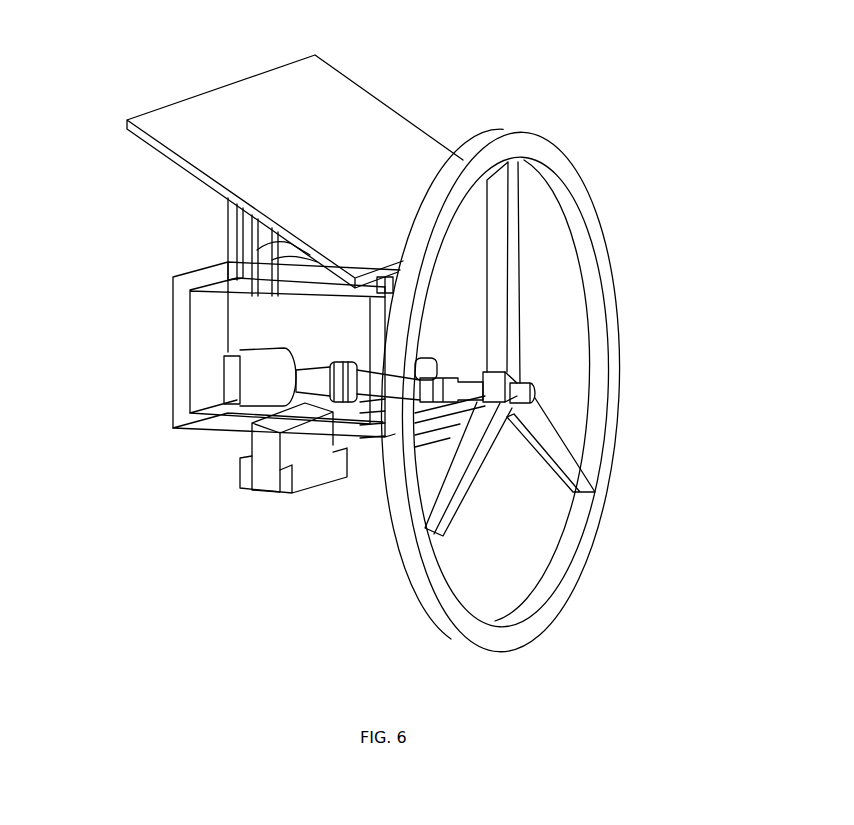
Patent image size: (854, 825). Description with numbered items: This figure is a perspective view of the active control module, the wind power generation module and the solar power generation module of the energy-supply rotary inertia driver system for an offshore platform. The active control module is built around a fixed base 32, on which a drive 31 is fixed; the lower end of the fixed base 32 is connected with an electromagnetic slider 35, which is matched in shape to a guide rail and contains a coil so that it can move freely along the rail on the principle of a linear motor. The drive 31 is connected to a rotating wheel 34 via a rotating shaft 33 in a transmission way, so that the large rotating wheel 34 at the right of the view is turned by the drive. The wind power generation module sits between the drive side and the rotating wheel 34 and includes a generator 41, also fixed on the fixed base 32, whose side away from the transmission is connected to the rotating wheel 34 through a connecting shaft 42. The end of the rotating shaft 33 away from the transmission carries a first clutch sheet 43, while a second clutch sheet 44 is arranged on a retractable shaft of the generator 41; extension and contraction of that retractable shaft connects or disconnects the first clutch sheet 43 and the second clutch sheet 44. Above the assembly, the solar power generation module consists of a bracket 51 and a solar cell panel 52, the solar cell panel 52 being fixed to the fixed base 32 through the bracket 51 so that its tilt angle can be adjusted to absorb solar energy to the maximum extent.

The drive 31 is at (274, 371).
The fixed base 32 is at (182, 365).
The rotating shaft 33 is at (313, 380).
The rotating wheel 34 is at (405, 540).
The electromagnetic slider 35 is at (317, 475).
The generator 41 is at (368, 383).
The connecting shaft 42 is at (445, 390).
The first clutch sheet 43 is at (337, 365).
The second clutch sheet 44 is at (353, 372).
The bracket 51 is at (235, 233).
The solar cell panel 52 is at (253, 133).